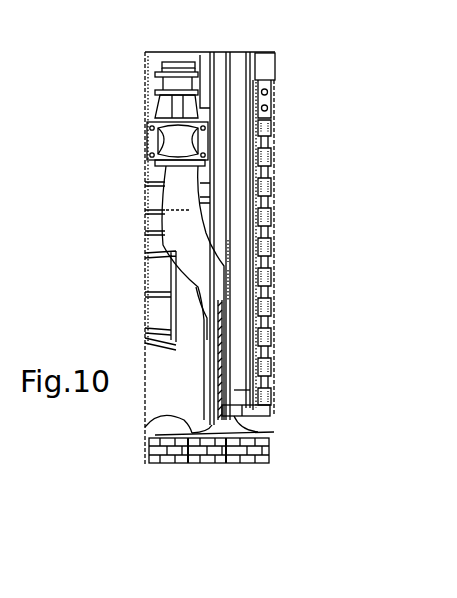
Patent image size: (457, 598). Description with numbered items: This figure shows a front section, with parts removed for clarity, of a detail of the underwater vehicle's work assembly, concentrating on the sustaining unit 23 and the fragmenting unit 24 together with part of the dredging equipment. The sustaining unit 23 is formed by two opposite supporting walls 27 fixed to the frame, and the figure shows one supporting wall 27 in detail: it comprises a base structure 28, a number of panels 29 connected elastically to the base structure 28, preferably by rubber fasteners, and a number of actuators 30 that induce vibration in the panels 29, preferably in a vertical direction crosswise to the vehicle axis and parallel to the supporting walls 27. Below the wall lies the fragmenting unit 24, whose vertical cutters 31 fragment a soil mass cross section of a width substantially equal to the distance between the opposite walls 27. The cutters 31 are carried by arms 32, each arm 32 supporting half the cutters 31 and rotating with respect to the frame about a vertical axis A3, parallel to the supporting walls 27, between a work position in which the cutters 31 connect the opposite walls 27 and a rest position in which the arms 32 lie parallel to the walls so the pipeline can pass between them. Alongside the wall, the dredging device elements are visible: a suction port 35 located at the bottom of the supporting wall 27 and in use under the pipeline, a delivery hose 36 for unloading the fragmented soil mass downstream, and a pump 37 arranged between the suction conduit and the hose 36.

The sustaining unit 23 is at (280, 52).
The fragmenting unit 24 is at (199, 477).
The supporting wall 27 is at (246, 50).
The base structure 28 is at (258, 422).
The panel 29 is at (271, 325).
The actuator 30 is at (273, 66).
The vertical cutter 31 is at (182, 478).
The arm 32 is at (145, 426).
The suction port 35 is at (140, 94).
The delivery hose 36 is at (180, 62).
The pump 37 is at (147, 138).
The vertical axis A3 is at (272, 391).